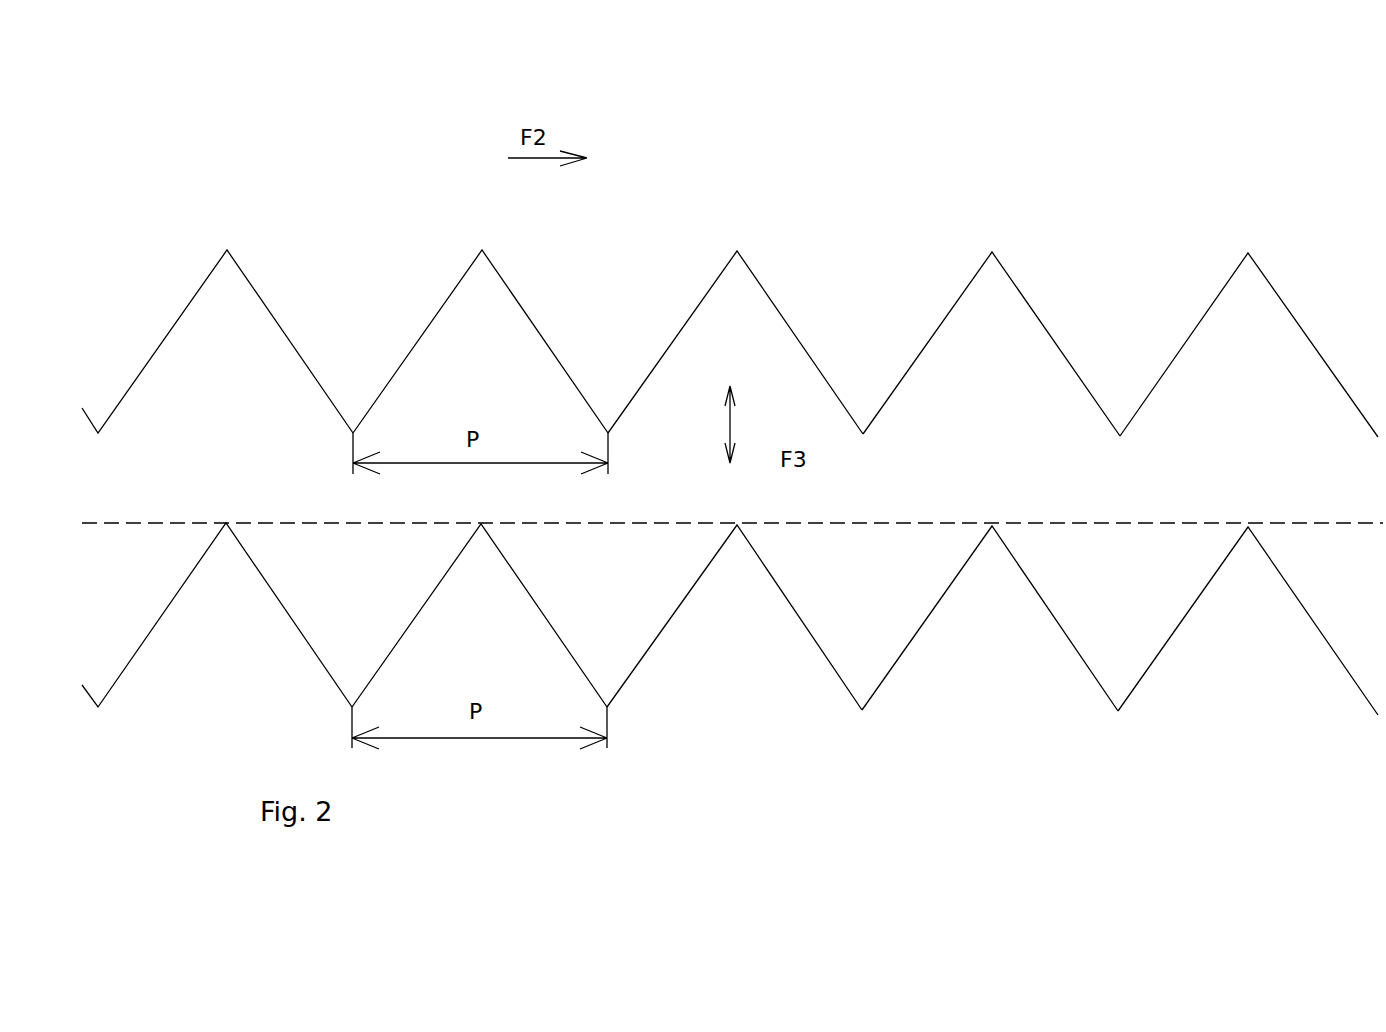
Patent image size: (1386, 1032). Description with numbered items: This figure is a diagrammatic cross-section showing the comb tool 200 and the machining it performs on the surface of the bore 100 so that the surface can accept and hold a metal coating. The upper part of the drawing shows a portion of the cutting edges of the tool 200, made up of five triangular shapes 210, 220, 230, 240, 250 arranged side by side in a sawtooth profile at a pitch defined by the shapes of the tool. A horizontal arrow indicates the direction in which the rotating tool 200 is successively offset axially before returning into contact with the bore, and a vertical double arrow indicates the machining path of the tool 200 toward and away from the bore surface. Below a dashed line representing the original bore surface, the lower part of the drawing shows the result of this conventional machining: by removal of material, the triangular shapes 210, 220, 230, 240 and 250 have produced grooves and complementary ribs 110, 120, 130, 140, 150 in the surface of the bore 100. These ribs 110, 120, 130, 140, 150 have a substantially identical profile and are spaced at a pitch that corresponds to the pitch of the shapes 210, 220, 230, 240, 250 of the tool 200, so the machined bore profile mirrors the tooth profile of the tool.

The bore 100 is at (737, 718).
The rib 110 is at (218, 617).
The rib 120 is at (480, 608).
The rib 130 is at (735, 613).
The rib 140 is at (988, 597).
The rib 150 is at (1252, 603).
The comb tool 200 is at (789, 197).
The triangular shape 210 is at (107, 357).
The triangular shape 220 is at (349, 391).
The triangular shape 230 is at (607, 394).
The triangular shape 240 is at (861, 393).
The triangular shape 250 is at (1124, 398).